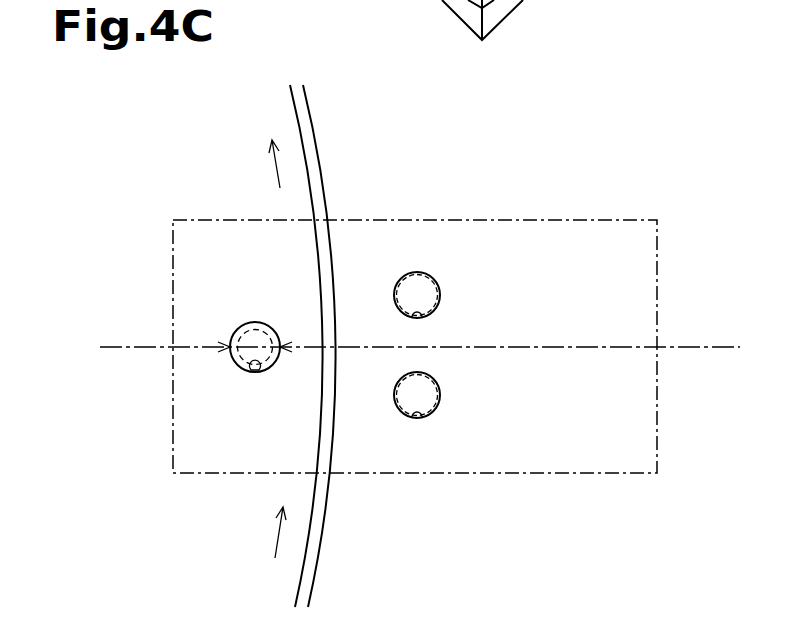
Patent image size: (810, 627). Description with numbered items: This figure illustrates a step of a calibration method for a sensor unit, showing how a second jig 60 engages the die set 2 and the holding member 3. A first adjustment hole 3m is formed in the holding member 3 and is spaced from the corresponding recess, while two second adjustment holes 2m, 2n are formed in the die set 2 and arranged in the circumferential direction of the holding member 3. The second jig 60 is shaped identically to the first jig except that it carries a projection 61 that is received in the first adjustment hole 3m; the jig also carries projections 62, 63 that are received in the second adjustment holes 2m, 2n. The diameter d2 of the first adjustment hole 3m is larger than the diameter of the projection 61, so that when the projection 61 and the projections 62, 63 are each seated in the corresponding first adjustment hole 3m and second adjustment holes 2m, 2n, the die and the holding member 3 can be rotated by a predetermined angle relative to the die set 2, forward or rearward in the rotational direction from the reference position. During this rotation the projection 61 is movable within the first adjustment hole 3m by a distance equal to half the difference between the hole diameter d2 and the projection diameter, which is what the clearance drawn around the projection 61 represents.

The die set 2 is at (325, 578).
The holding member 3 is at (290, 131).
The second jig 60 is at (550, 219).
The projection 61 is at (275, 325).
The projection 62 is at (440, 295).
The projection 63 is at (440, 395).
The second adjustment hole 2m is at (421, 318).
The second adjustment hole 2n is at (421, 418).
The first adjustment hole 3m is at (257, 370).
The diameter of the first adjustment hole d2 is at (210, 350).